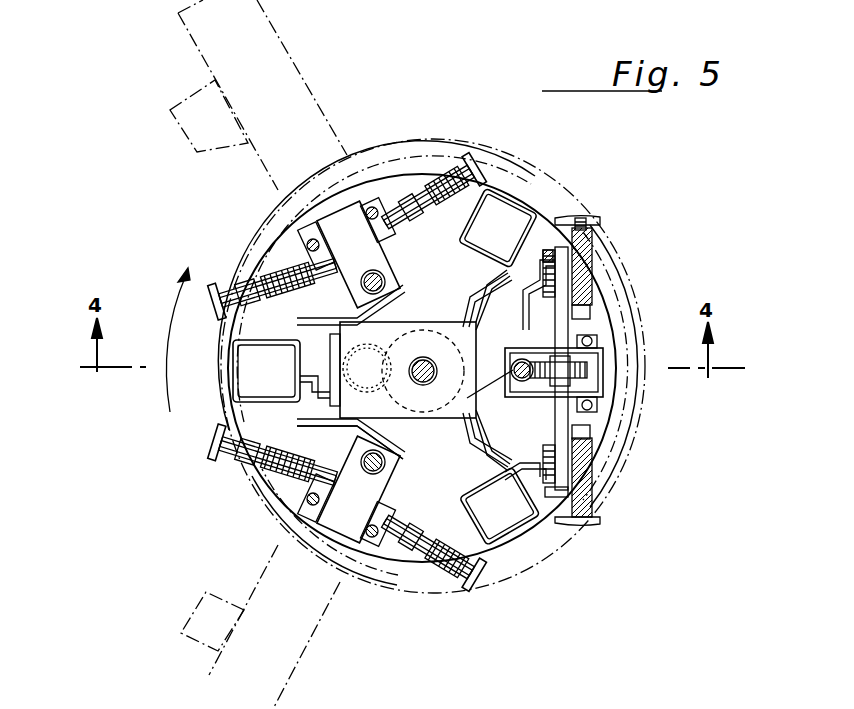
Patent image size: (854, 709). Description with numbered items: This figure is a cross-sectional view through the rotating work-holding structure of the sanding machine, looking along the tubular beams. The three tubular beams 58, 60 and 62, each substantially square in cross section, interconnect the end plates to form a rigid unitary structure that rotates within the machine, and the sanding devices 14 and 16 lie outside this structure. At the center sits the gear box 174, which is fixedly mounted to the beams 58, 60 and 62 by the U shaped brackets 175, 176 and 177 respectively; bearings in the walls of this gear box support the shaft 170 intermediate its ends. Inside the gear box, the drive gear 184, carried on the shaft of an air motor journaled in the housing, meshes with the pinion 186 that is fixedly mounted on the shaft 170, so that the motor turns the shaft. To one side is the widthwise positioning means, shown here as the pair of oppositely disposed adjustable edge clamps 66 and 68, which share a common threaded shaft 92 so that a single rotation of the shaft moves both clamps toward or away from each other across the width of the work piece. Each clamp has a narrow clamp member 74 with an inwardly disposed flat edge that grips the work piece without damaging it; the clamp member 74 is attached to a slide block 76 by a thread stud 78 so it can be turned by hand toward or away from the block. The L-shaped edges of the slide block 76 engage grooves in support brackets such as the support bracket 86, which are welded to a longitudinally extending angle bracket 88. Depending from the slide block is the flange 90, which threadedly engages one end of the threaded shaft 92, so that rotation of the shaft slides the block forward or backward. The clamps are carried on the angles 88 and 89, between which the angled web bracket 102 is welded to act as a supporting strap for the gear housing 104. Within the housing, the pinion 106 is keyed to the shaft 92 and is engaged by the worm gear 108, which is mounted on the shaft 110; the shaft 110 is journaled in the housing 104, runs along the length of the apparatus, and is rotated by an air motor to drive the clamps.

The sanding device 14 is at (330, 636).
The sanding device 16 is at (355, 68).
The tubular beam 58 is at (515, 198).
The tubular beam 60 is at (520, 532).
The tubular beam 62 is at (234, 378).
The adjustable edge clamp 66 is at (580, 205).
The adjustable edge clamp 68 is at (603, 540).
The clamp member 74 is at (590, 218).
The slide block 76 is at (594, 270).
The threaded stud 78 is at (588, 238).
The support bracket 86 is at (552, 320).
The angle bracket 88 is at (524, 285).
The angle 89 is at (520, 478).
The flange 90 is at (543, 256).
The threaded shaft 92 is at (562, 326).
The angled web bracket 102 is at (505, 434).
The gear housing 104 is at (603, 357).
The pinion 106 is at (580, 378).
The worm gear 108 is at (527, 396).
The shaft 110 is at (480, 393).
The shaft 170 is at (424, 356).
The gear box 174 is at (396, 416).
The U shaped bracket 175 is at (486, 284).
The U shaped bracket 176 is at (483, 438).
The U shaped bracket 177 is at (316, 390).
The drive gear 184 is at (380, 340).
The pinion 186 is at (403, 356).